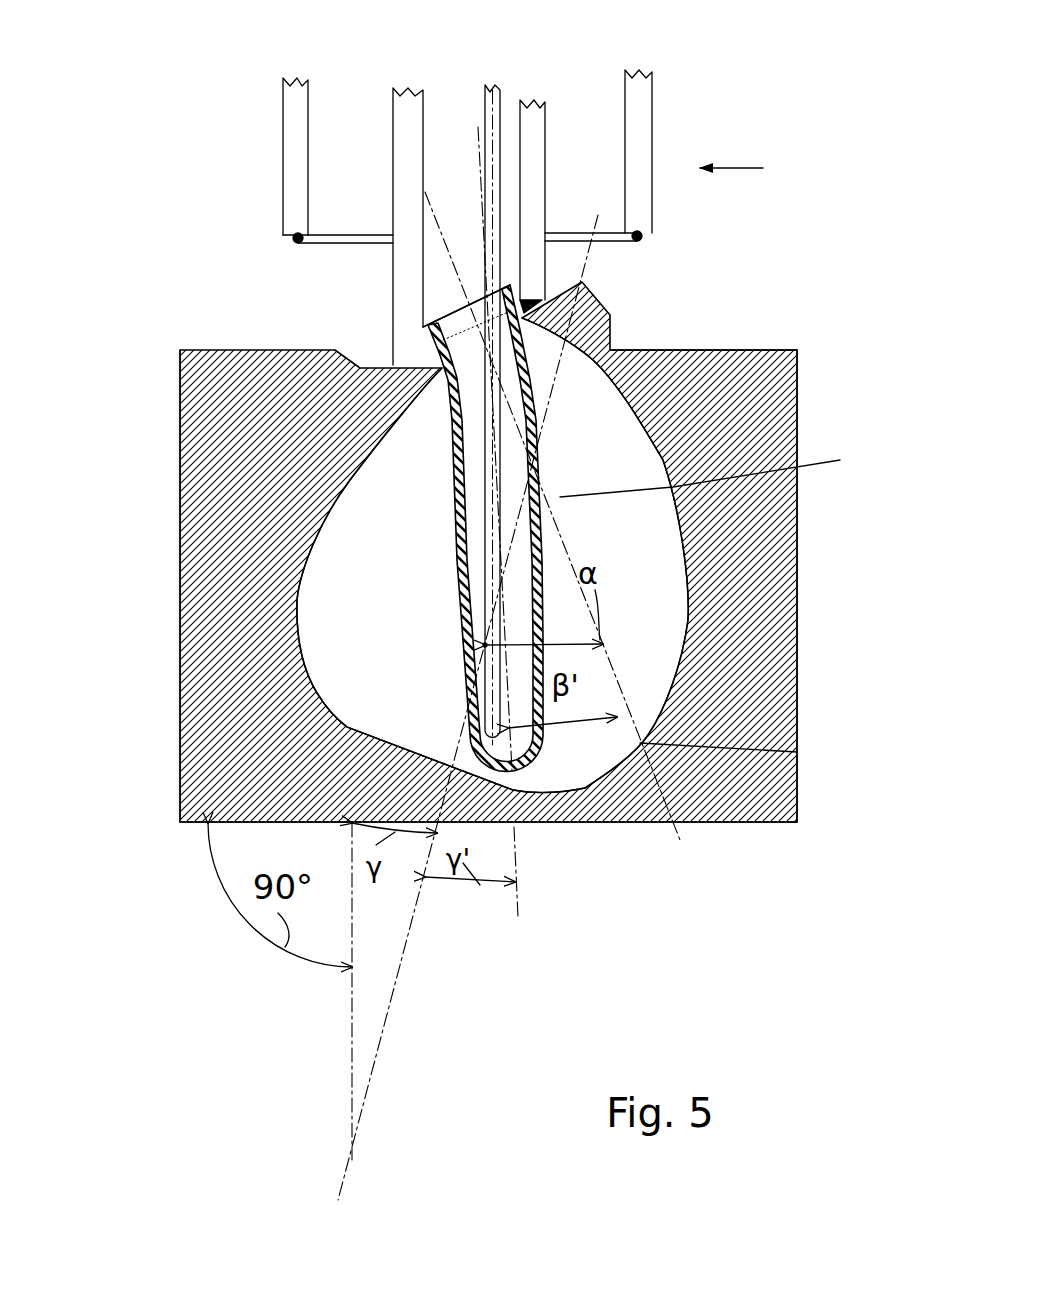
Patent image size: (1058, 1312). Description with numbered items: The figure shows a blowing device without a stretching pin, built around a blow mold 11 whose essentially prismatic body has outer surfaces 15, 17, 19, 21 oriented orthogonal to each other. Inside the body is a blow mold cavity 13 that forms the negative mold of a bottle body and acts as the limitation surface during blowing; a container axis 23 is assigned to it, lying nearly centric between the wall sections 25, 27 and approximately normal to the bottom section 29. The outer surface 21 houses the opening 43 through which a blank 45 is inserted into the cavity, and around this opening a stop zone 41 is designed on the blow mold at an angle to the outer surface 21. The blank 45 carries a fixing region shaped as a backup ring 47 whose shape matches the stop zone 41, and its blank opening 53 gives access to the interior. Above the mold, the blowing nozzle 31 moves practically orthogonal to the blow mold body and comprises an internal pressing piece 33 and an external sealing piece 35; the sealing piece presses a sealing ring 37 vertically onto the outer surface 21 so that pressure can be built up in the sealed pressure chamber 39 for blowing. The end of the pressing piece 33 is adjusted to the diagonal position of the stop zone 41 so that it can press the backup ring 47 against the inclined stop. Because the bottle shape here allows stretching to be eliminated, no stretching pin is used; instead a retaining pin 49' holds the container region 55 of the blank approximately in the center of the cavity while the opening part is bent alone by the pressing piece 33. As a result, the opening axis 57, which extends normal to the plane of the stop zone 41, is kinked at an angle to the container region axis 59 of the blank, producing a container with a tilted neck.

The blow mold 11 is at (797, 553).
The blow mold cavity 13 is at (566, 478).
The outer surface 15 is at (797, 705).
The outer surface 17 is at (727, 822).
The outer surface 19 is at (181, 703).
The outer surface 21 is at (752, 349).
The container axis 23 is at (398, 967).
The wall section 25 is at (297, 584).
The wall section 27 is at (668, 688).
The bottom section 29 is at (340, 713).
The blowing nozzle 31 is at (763, 168).
The pressing piece 33 is at (550, 127).
The sealing piece 35 is at (665, 122).
The sealing ring 37 is at (637, 241).
The pressure chamber 39 is at (433, 140).
The stop zone 41 is at (400, 325).
The opening 43 is at (423, 268).
The blank 45 is at (455, 470).
The backup ring 47 is at (525, 293).
The retaining pin 49' is at (522, 372).
The blank opening 53 is at (443, 320).
The container region 55 is at (727, 468).
The opening axis 57 is at (797, 752).
The container region axis 59 is at (515, 840).